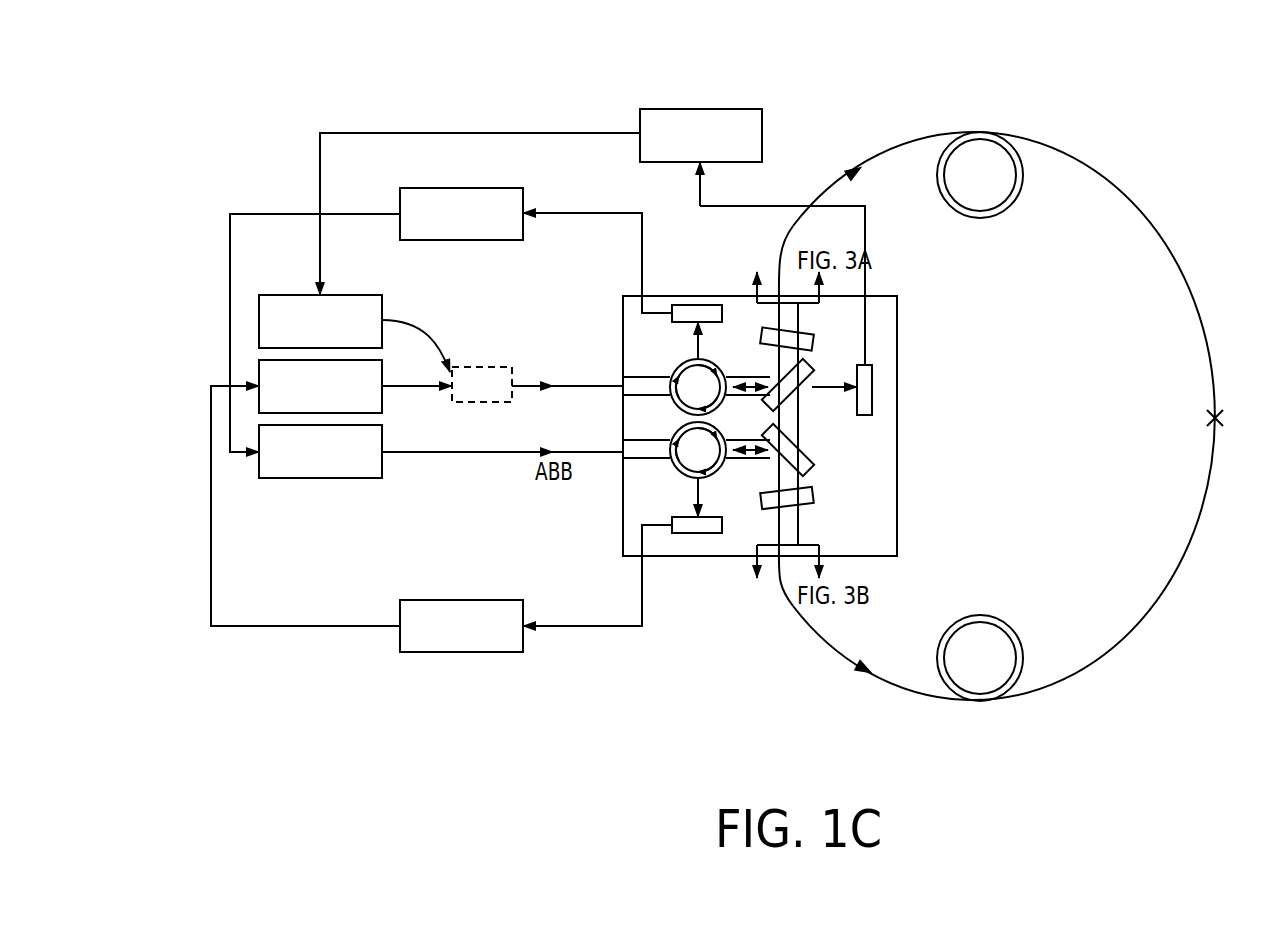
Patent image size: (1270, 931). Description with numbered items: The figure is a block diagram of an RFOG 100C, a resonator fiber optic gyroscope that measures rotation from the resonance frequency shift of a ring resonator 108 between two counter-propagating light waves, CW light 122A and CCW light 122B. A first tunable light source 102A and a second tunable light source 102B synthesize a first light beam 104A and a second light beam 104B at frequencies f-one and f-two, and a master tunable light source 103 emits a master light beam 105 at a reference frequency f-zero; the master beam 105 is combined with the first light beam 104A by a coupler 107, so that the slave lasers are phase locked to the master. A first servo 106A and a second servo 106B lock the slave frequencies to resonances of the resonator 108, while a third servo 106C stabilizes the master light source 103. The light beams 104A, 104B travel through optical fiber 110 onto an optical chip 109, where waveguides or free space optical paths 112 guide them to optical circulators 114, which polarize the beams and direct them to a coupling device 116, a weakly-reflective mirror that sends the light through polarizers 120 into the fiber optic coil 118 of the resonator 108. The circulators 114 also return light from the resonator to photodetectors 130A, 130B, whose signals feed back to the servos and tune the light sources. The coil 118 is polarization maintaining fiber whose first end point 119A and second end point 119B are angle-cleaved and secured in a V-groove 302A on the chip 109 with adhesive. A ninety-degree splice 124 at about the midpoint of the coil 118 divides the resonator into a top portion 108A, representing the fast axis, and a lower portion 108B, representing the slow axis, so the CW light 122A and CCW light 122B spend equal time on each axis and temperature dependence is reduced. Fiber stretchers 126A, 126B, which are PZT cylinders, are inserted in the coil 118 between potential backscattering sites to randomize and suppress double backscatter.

The RFOG 100C is at (350, 117).
The first tunable light source 102A is at (346, 401).
The second tunable light source 102B is at (346, 466).
The master tunable light source 103 is at (339, 336).
The first tunable light beam 104A is at (405, 388).
The second tunable light beam 104B is at (405, 455).
The master light beam 105 is at (424, 342).
The first servo 106A is at (486, 228).
The second servo 106B is at (486, 640).
The third servo 106C is at (726, 149).
The coupler 107 is at (501, 398).
The ring resonator 108 is at (1183, 203).
The top portion of the resonator 108A is at (1210, 290).
The lower portion of the resonator 108B is at (1195, 565).
The optical chip 109 is at (622, 530).
The optical fiber 110 is at (578, 384).
The waveguide 112 is at (653, 383).
The optical circulator 114 is at (675, 367).
The coupling device 116 is at (792, 443).
The fiber optic coil 118 is at (837, 185).
The first end point of the fiber optic coil 119A is at (800, 323).
The second end point of the fiber optic coil 119B is at (800, 512).
The polarizer 120 is at (762, 331).
The CW light 122A is at (858, 168).
The CCW light 122B is at (860, 673).
The 90-degree splice 124 is at (1222, 420).
The first fiber stretcher 126A is at (985, 168).
The second fiber stretcher 126B is at (990, 682).
The first photodetector 130A is at (680, 305).
The second photodetector 130B is at (708, 533).
The V-groove 302A is at (796, 311).